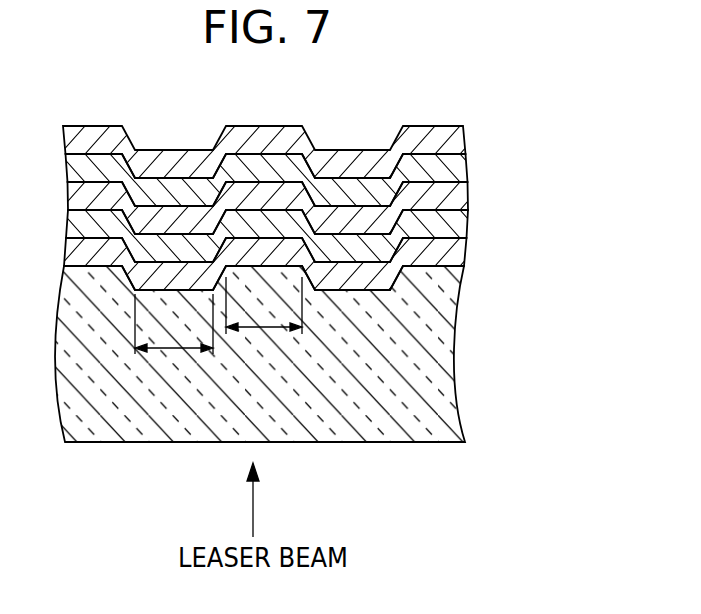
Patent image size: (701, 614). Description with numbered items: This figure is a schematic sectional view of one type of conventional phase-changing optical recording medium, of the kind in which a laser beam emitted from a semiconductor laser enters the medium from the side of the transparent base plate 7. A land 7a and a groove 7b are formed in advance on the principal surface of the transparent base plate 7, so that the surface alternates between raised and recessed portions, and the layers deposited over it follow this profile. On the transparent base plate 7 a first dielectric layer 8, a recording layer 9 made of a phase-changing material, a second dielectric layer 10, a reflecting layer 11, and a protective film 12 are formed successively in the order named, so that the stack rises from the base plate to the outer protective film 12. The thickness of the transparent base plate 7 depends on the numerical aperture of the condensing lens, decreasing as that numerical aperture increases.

The transparent base plate 7 is at (442, 338).
The land 7a is at (272, 328).
The groove 7b is at (180, 350).
The first dielectric layer 8 is at (453, 260).
The recording layer 9 is at (453, 225).
The second dielectric layer 10 is at (453, 205).
The reflecting layer 11 is at (453, 172).
The protective film 12 is at (453, 137).